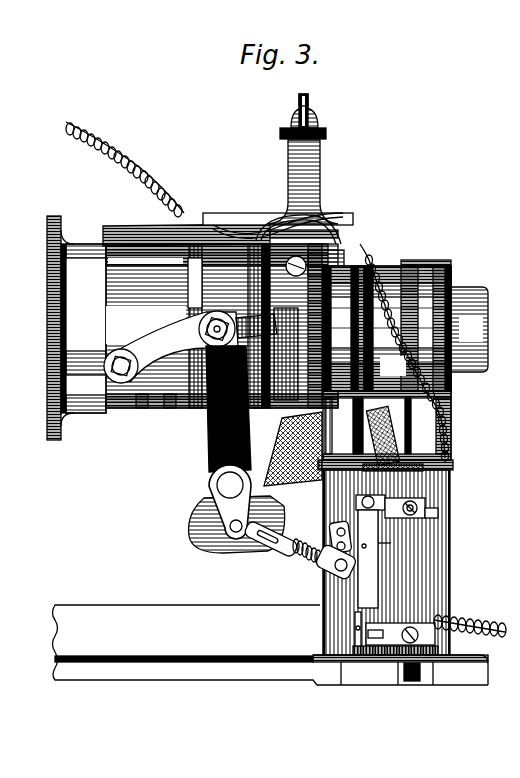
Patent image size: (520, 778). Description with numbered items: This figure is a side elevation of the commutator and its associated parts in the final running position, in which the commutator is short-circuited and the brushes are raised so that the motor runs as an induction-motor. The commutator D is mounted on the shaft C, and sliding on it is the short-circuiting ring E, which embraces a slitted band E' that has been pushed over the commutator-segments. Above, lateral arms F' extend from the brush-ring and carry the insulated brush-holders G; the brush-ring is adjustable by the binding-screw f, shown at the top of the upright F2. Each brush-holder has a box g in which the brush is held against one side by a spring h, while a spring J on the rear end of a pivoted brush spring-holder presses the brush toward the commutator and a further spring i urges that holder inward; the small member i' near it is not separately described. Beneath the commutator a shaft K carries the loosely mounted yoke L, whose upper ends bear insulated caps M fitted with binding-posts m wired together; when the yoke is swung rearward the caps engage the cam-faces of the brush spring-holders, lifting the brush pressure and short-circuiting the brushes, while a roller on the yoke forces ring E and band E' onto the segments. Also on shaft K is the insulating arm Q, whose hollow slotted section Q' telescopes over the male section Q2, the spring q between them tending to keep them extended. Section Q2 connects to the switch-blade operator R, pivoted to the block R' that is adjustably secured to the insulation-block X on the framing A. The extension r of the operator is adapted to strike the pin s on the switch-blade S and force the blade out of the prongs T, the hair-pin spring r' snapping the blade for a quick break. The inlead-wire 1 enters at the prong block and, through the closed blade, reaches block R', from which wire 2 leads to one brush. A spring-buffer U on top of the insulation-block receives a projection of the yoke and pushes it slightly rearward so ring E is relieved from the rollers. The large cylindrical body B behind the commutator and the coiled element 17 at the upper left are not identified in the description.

The framing A is at (271, 645).
The insulation-block X is at (440, 532).
The switch-blade operator R is at (370, 551).
The block R' is at (411, 508).
The extension r is at (419, 492).
The hair-pin-like spring r' is at (388, 545).
The pin s is at (366, 552).
The switch-blade S is at (364, 604).
The prongs T is at (345, 690).
The inlead-wire 1 is at (481, 613).
The commutator D is at (117, 400).
The springs J is at (222, 326).
The boxes g is at (145, 282).
The short-circuiting ring E is at (135, 425).
The slitted band E' is at (159, 432).
The spring h is at (101, 222).
The brush-holders G is at (229, 214).
The post F2 is at (313, 162).
The binding-screw f is at (300, 108).
The spring i is at (305, 219).
The cylinder B is at (387, 325).
The shaft C is at (469, 329).
The spring-buffer U is at (388, 419).
The wire 2 is at (440, 410).
The spring 17 is at (123, 140).
The insulated pieces M is at (171, 320).
The binding-posts m is at (254, 319).
The pin i' is at (270, 310).
The yoke L is at (200, 452).
The lateral arms F' is at (292, 449).
The shaft K is at (222, 478).
The arm Q is at (230, 502).
The hollow slotted section Q' is at (234, 556).
The spring q is at (280, 546).
The male section Q2 is at (312, 560).